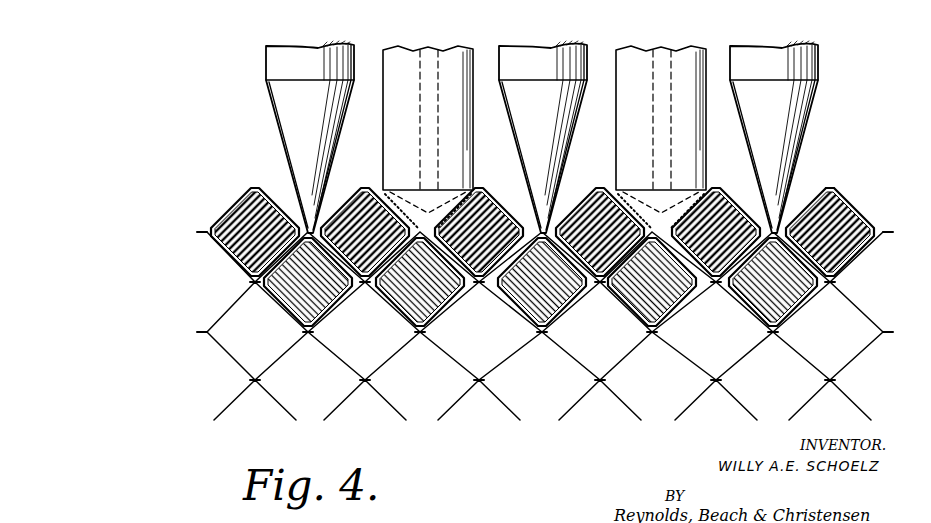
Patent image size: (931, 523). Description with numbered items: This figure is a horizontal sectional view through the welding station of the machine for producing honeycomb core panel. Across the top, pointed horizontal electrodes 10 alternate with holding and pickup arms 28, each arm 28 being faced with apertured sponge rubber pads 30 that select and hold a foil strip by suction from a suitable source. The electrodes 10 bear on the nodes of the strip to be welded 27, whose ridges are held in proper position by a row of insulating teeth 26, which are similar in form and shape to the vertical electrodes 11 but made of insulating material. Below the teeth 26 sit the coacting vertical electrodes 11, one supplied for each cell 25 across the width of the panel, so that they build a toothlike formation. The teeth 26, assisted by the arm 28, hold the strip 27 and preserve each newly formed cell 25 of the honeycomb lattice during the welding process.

The horizontal electrode 10 is at (312, 63).
The vertical electrode 11 is at (293, 292).
The cell 25 is at (833, 323).
The insulating tooth 26 is at (245, 210).
The strip to be welded 27 is at (833, 187).
The holding and pickup arm 28 is at (451, 60).
The apertured sponge rubber pad 30 is at (438, 157).